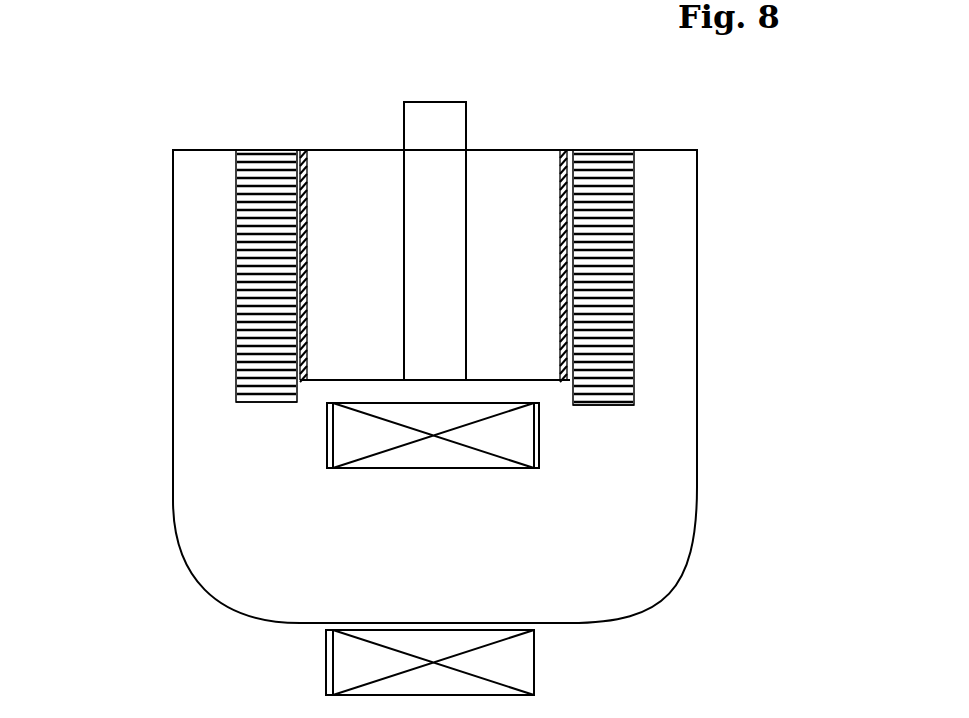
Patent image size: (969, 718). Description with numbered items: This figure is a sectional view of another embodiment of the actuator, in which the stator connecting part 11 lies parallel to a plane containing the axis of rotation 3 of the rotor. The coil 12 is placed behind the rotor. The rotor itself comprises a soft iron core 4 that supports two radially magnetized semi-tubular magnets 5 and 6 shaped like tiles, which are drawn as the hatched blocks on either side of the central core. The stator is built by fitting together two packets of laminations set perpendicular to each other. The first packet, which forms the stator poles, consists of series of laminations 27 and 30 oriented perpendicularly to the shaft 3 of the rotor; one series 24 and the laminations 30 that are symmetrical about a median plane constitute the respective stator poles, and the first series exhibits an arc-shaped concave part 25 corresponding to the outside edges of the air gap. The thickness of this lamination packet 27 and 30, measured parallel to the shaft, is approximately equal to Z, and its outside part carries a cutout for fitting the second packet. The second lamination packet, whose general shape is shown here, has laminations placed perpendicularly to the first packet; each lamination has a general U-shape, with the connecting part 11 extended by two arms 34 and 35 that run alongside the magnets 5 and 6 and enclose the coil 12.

The axis of rotation / shaft of the rotor 3 is at (440, 197).
The soft iron core 4 is at (365, 192).
The semi-tubular magnet 5 is at (573, 262).
The semi-tubular magnet 6 is at (302, 288).
The stator connecting part 11 is at (318, 548).
The coil 12 is at (498, 673).
The series of laminations 24 is at (238, 410).
The arc-shaped concave part 25 is at (629, 427).
The lamination 27 is at (634, 330).
The lamination 30 is at (236, 205).
The arm 34 is at (195, 270).
The arm 35 is at (678, 256).